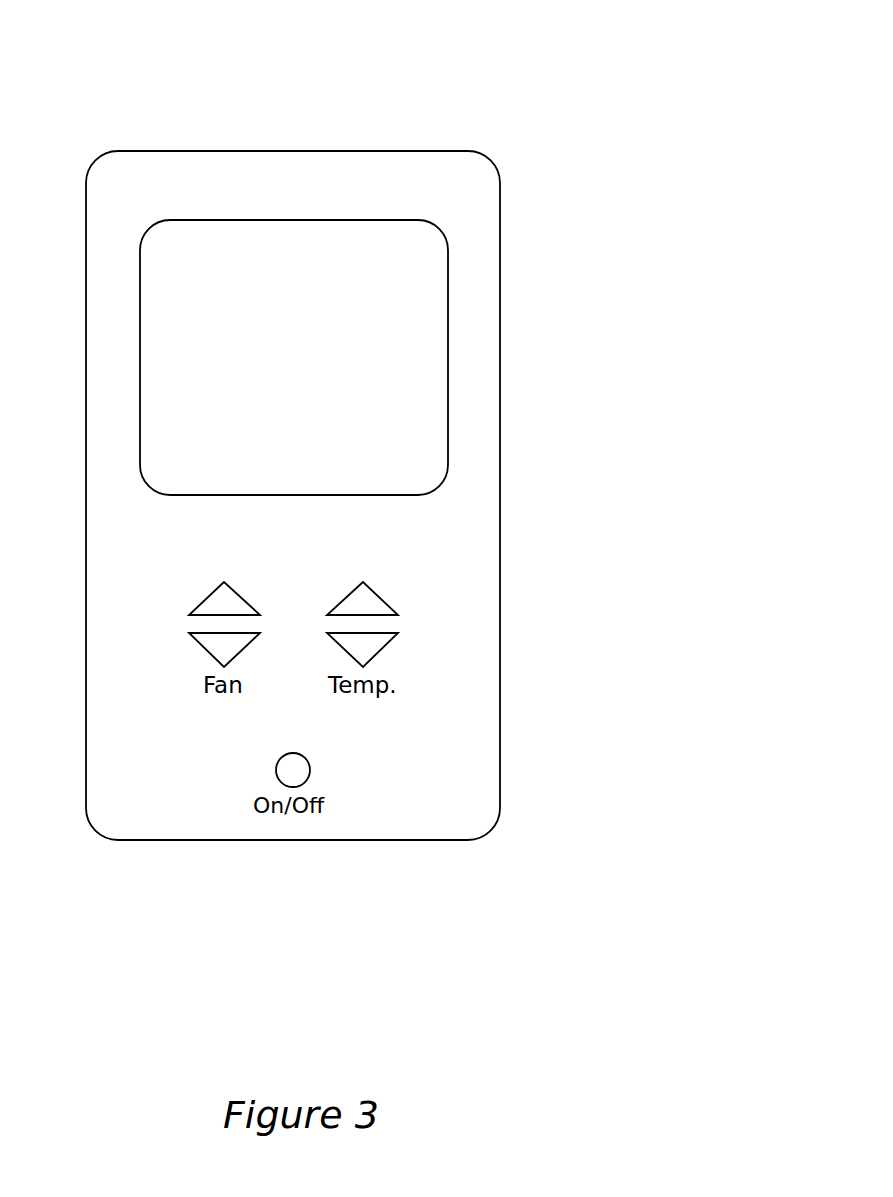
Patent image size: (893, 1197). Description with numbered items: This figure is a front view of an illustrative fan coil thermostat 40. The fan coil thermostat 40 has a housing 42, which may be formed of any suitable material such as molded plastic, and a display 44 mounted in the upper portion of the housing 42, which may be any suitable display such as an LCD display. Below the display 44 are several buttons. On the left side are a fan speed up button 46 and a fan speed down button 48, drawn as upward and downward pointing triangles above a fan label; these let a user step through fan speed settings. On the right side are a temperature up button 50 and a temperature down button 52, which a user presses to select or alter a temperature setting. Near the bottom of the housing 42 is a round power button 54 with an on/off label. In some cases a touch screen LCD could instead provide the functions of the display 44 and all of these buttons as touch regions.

The fan coil thermostat 40 is at (488, 70).
The housing 42 is at (500, 236).
The display 44 is at (427, 403).
The fan speed up button 46 is at (207, 598).
The fan speed down button 48 is at (207, 648).
The temperature up button 50 is at (380, 598).
The temperature down button 52 is at (380, 648).
The power button 54 is at (300, 770).